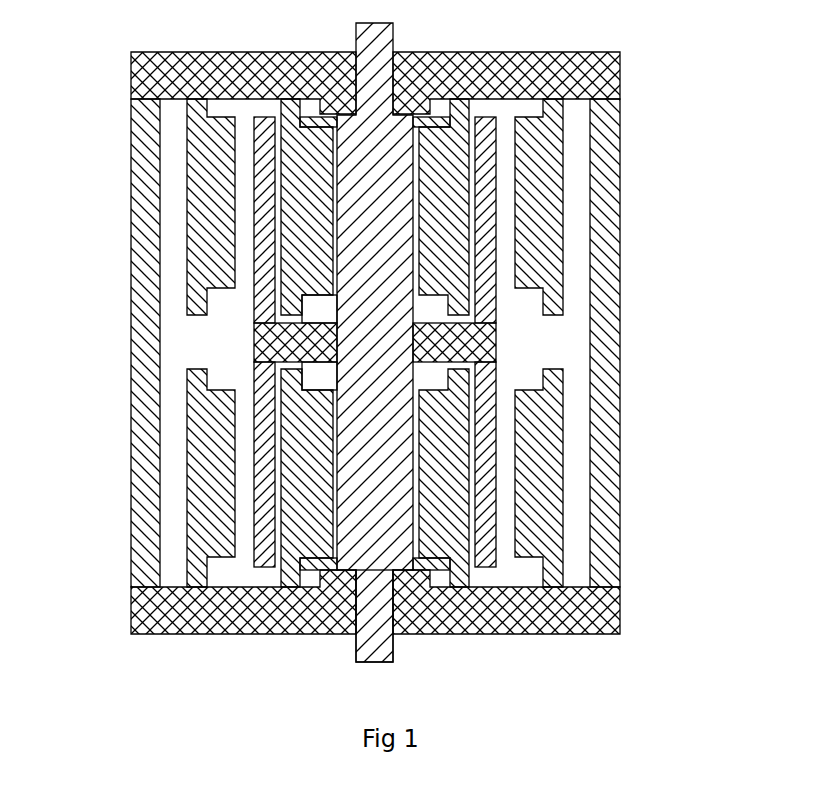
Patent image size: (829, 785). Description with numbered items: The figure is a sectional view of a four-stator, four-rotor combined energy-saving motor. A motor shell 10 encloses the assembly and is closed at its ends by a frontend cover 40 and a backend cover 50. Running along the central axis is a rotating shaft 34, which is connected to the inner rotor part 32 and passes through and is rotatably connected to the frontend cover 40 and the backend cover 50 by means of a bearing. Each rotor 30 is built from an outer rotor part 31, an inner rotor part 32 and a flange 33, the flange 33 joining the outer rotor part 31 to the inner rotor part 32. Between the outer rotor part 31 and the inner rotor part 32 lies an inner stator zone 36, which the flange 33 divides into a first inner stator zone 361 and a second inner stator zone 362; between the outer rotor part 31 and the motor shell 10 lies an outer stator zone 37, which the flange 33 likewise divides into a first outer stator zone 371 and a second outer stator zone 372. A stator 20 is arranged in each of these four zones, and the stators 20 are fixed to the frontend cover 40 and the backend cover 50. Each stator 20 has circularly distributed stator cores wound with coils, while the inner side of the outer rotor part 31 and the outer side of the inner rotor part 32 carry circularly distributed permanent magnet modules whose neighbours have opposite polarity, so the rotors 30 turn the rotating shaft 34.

The motor shell 10 is at (345, 343).
The stator 20 is at (329, 345).
The rotor 30 is at (386, 390).
The outer rotor part 31 is at (284, 342).
The inner rotor part 32 is at (243, 363).
The flange 33 is at (280, 313).
The rotating shaft 34 is at (351, 636).
The inner stator zone 36 is at (187, 370).
The first inner stator zone 361 is at (68, 404).
The second inner stator zone 362 is at (203, 358).
The outer stator zone 37 is at (625, 343).
The first outer stator zone 371 is at (698, 436).
The second outer stator zone 372 is at (602, 275).
The frontend cover 40 is at (375, 628).
The backend cover 50 is at (375, 60).